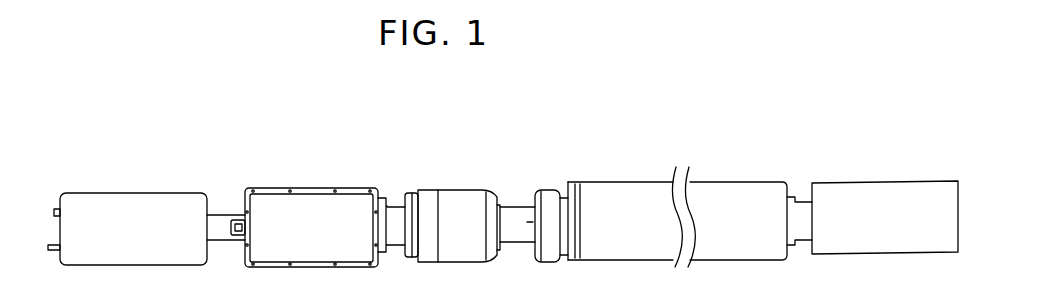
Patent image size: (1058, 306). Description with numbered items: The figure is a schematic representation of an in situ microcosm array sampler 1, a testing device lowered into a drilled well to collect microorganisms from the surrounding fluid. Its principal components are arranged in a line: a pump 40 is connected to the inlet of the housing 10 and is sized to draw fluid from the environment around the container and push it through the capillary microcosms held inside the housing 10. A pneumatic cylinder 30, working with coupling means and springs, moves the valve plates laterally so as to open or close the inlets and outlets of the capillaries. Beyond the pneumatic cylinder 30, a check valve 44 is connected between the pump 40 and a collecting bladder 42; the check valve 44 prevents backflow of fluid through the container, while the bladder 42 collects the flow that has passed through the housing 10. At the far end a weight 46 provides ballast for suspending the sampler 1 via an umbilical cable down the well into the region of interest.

The in situ microcosm array sampler 1 is at (699, 106).
The housing 10 is at (307, 203).
The pneumatic cylinder 30 is at (448, 202).
The pump 40 is at (142, 203).
The bladder 42 is at (615, 192).
The check valve 44 is at (545, 198).
The weight 46 is at (868, 197).